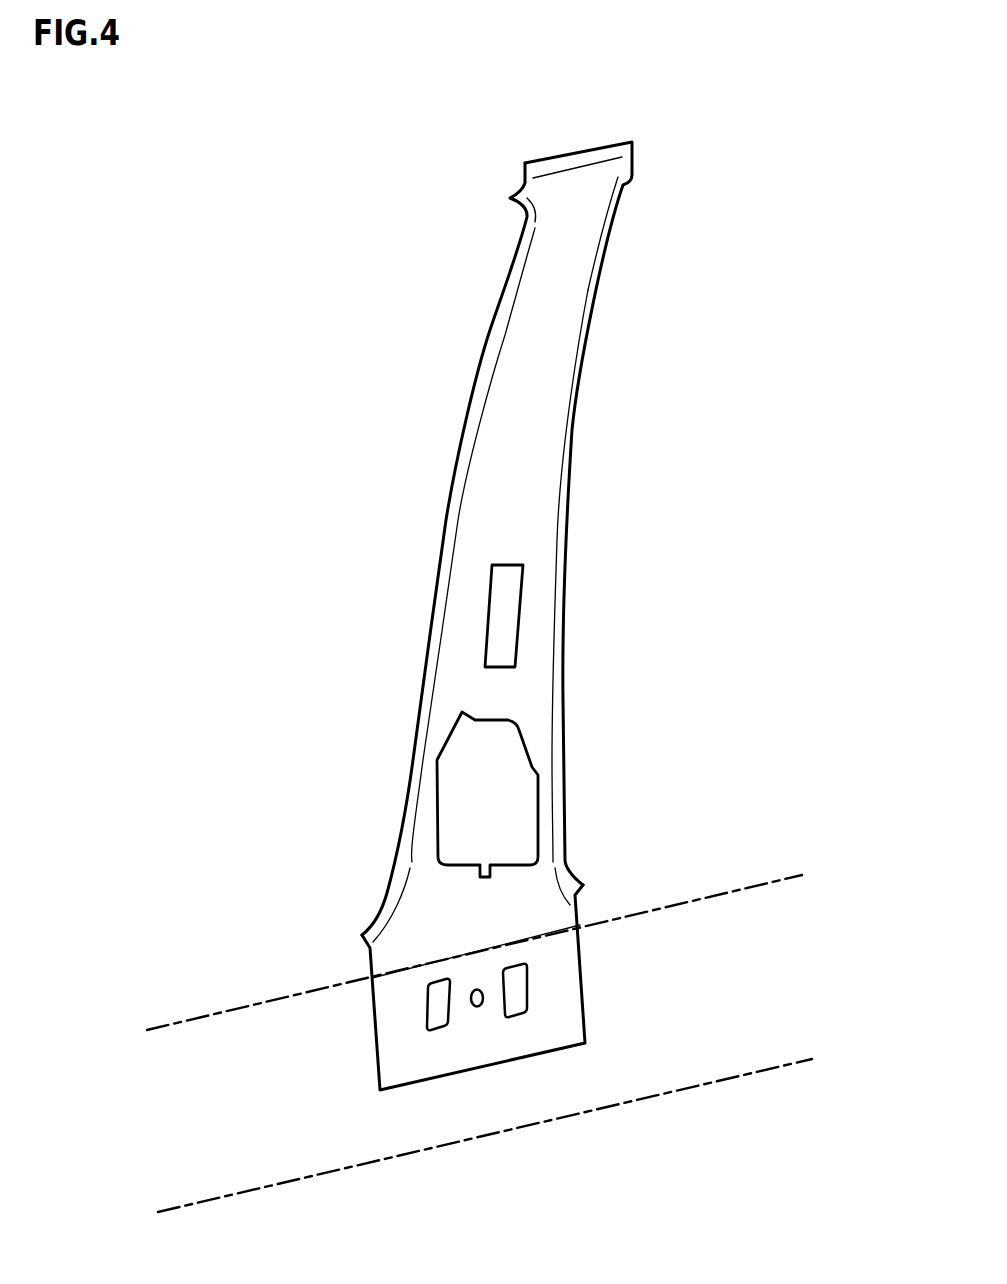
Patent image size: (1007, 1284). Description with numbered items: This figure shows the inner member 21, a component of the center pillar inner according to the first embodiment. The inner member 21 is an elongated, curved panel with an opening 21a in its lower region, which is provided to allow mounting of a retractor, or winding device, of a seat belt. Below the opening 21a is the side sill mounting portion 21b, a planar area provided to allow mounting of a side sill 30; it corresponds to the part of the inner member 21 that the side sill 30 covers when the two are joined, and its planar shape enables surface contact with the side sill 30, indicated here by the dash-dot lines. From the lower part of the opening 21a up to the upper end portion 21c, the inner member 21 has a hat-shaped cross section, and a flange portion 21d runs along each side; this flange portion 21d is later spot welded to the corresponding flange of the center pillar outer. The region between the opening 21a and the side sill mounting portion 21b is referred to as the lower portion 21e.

The inner member 21 is at (467, 360).
The opening 21a is at (450, 777).
The side sill mounting portion 21b is at (493, 1037).
The upper end portion 21c is at (580, 195).
The flange portion 21d is at (445, 535).
The lower portion 21e is at (435, 912).
The side sill 30 is at (695, 930).